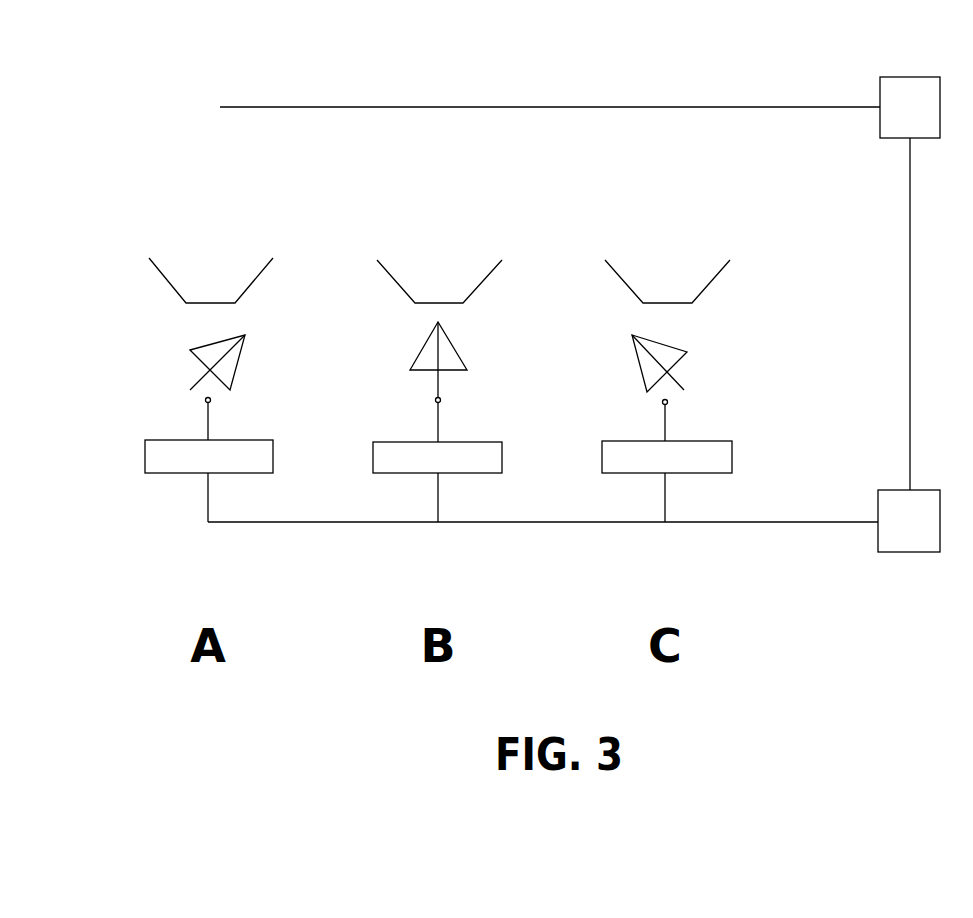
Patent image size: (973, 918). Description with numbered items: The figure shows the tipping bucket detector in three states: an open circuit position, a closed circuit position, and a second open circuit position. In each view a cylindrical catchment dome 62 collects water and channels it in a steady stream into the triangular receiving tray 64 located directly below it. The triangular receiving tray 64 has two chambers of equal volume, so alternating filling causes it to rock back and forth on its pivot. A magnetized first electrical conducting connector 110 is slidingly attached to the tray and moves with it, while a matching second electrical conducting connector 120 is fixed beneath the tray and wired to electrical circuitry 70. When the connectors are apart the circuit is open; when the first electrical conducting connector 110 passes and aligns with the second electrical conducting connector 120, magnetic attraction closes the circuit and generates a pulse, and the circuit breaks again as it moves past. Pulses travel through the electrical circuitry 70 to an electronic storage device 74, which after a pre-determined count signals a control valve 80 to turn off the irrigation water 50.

In FIG. 3C, the irrigation water 50 is at (543, 106).
In FIG. 3A, the cylindrical catchment dome 62 is at (205, 257).
In FIG. 3B, the cylindrical catchment dome 62 is at (433, 257).
In FIG. 3C, the cylindrical catchment dome 62 is at (662, 257).
In FIG. 3A, the triangular receiving tray 64 is at (190, 336).
In FIG. 3B, the triangular receiving tray 64 is at (405, 335).
In FIG. 3C, the triangular receiving tray 64 is at (622, 356).
In FIG. 3A, the electrical circuitry 70 is at (170, 484).
In FIG. 3B, the electrical circuitry 70 is at (399, 484).
In FIG. 3C, the electrical circuitry 70 is at (627, 484).
In FIG. 3C, the electronic storage device 74 is at (912, 533).
In FIG. 3C, the control valve 80 is at (920, 96).
In FIG. 3A, the first electrical conducting connector 110 is at (190, 375).
In FIG. 3B, the first electrical conducting connector 110 is at (428, 382).
In FIG. 3C, the first electrical conducting connector 110 is at (688, 378).
In FIG. 3A, the second electrical conducting connector 120 is at (200, 423).
In FIG. 3B, the second electrical conducting connector 120 is at (428, 422).
In FIG. 3C, the second electrical conducting connector 120 is at (680, 423).